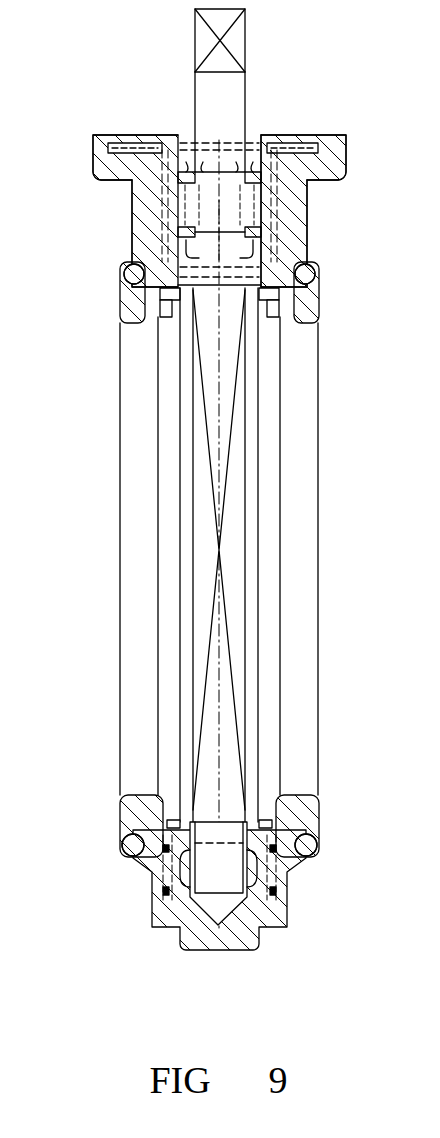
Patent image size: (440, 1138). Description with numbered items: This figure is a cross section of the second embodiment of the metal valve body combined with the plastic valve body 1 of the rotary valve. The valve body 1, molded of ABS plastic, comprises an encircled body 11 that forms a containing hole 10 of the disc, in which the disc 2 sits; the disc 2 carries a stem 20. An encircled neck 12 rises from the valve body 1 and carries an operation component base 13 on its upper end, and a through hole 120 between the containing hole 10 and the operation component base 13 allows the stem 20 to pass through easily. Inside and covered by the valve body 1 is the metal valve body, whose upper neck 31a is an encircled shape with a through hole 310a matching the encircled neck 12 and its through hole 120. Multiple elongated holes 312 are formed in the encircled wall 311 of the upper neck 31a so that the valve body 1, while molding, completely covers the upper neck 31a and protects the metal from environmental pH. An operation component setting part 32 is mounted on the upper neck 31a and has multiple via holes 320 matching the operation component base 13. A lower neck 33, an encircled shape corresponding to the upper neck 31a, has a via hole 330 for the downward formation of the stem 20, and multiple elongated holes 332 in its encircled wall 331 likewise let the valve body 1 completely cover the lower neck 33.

The valve body 1 is at (347, 134).
The disc 2 is at (207, 603).
The containing hole of the disc 10 is at (272, 603).
The encircled body 11 is at (280, 913).
The encircled neck 12 is at (308, 192).
The operation component base 13 is at (115, 142).
The stem 20 is at (226, 110).
The upper neck 31a is at (133, 250).
The operation component setting part 32 is at (302, 146).
The lower neck 33 is at (305, 840).
The through hole 120 is at (265, 208).
The encircled wall of upper neck 311 is at (138, 272).
The elongated holes 312 is at (152, 231).
The via holes 320 is at (173, 131).
The via hole 330 is at (176, 902).
The encircled wall of lower neck 331 is at (162, 895).
The elongated holes 332 is at (156, 878).
The through hole 310a is at (170, 270).